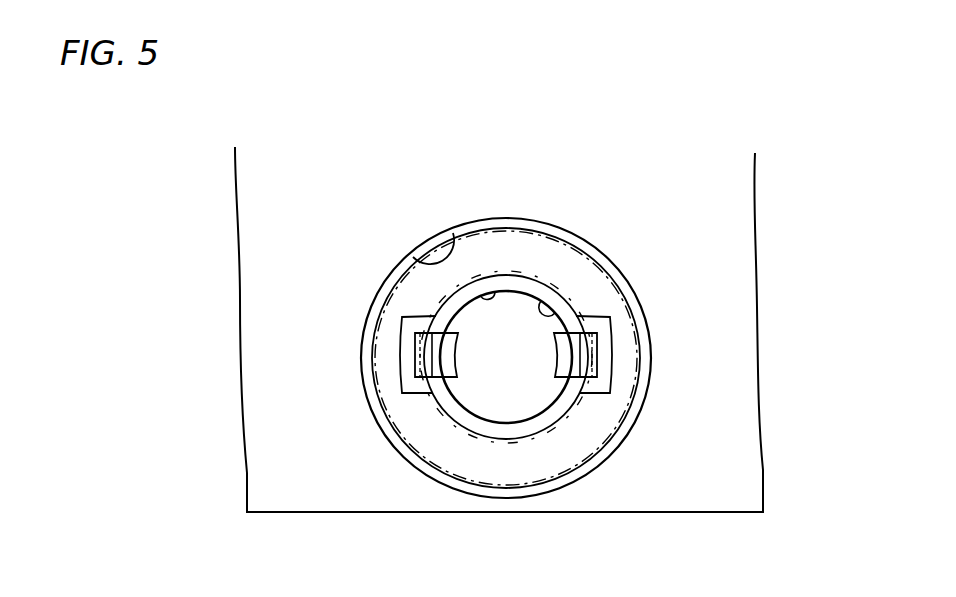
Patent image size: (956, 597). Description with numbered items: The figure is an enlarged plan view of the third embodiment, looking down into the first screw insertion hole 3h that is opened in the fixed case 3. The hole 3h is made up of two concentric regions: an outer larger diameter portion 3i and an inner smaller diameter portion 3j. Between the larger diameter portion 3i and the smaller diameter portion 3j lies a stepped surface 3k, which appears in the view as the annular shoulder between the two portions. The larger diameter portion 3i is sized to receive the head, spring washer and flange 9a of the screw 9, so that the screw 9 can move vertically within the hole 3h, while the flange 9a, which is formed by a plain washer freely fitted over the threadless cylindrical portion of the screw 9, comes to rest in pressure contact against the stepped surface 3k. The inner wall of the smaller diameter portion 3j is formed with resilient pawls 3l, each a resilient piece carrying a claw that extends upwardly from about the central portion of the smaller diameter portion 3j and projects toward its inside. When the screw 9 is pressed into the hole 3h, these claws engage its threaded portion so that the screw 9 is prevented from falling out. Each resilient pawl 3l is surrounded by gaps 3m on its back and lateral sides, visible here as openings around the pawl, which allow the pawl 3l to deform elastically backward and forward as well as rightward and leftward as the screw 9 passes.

The fixed case 3 is at (676, 525).
The first screw insertion hole 3h is at (500, 292).
The larger diameter portion 3i is at (640, 387).
The smaller diameter portion 3j is at (540, 307).
The stepped surface 3k is at (452, 482).
The resilient pawls 3l is at (554, 364).
The gaps 3m is at (402, 355).
The screw 9 is at (512, 273).
The flange 9a is at (583, 247).